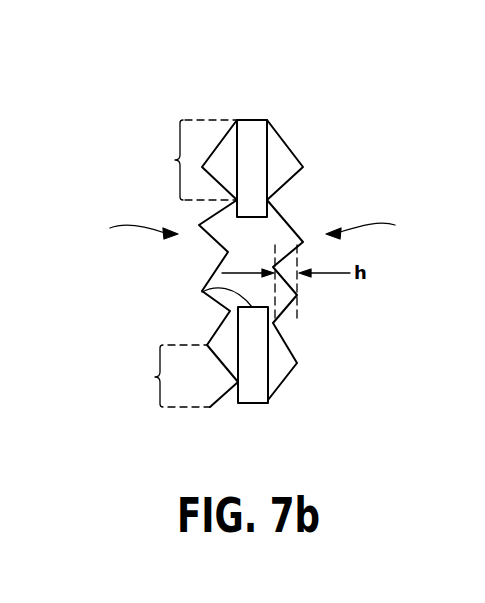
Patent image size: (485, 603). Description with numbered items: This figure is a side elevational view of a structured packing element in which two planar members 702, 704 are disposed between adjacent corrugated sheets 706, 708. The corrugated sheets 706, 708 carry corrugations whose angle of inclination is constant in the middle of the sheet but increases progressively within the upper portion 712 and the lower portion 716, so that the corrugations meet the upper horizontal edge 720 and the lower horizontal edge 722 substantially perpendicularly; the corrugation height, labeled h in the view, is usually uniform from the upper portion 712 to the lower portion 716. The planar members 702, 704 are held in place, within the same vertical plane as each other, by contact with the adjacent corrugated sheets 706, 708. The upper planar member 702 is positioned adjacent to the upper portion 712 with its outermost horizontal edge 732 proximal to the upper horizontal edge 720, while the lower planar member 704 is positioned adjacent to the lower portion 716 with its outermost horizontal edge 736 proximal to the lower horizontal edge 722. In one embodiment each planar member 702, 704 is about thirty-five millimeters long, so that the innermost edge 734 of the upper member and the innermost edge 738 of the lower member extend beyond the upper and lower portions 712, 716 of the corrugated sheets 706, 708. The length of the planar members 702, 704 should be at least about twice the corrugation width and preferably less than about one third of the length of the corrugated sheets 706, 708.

The planar member 702 is at (248, 135).
The planar member 704 is at (255, 405).
The corrugated sheet 706 is at (376, 226).
The corrugated sheet 708 is at (128, 228).
The upper portion 712 is at (221, 263).
The lower portion 716 is at (166, 376).
The upper horizontal edge 720 is at (233, 118).
The lower horizontal edge 722 is at (210, 410).
The outermost horizontal edge 732 is at (270, 120).
The innermost edge 734 is at (250, 218).
The outermost horizontal edge 736 is at (268, 405).
The innermost edge 738 is at (202, 292).